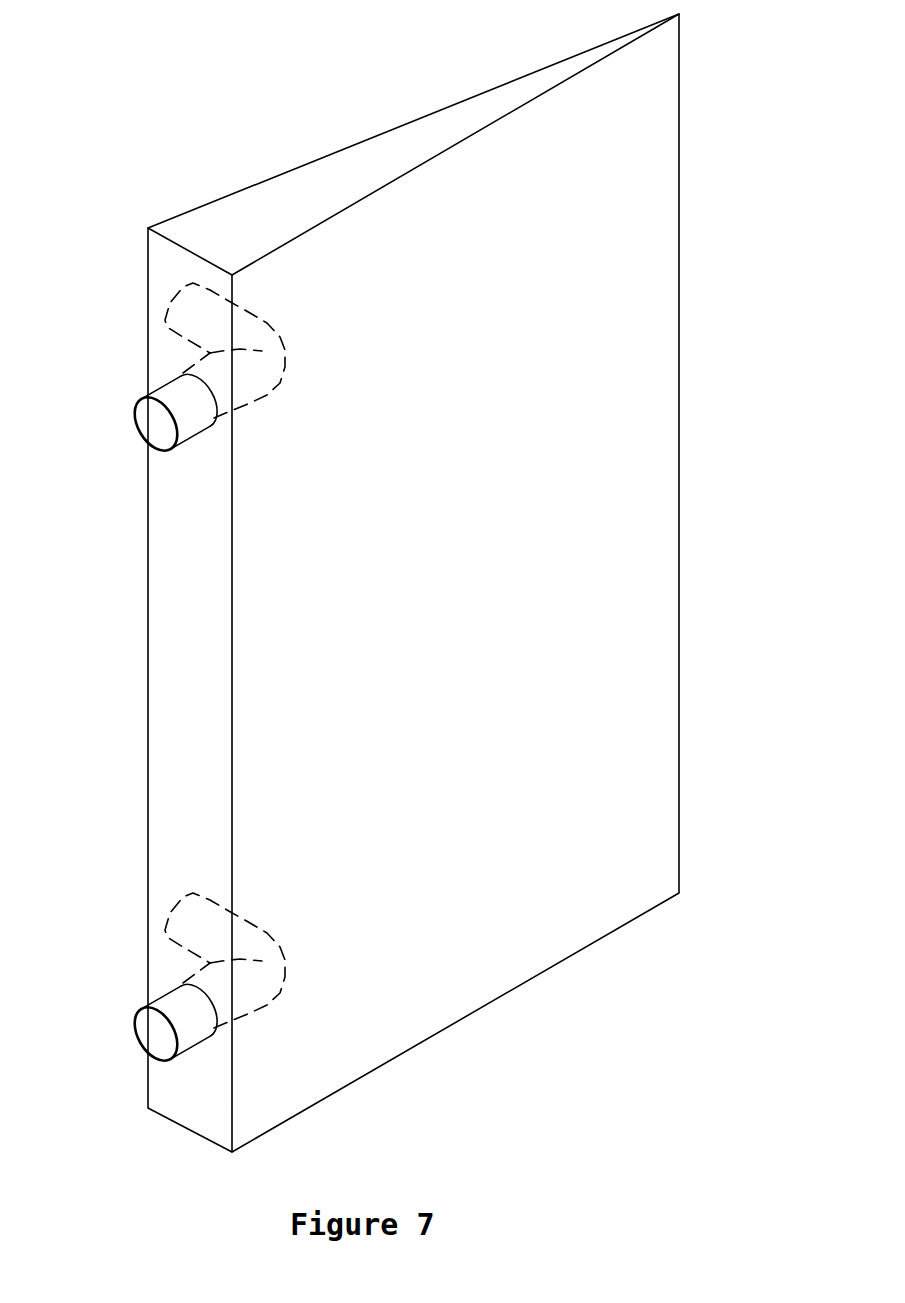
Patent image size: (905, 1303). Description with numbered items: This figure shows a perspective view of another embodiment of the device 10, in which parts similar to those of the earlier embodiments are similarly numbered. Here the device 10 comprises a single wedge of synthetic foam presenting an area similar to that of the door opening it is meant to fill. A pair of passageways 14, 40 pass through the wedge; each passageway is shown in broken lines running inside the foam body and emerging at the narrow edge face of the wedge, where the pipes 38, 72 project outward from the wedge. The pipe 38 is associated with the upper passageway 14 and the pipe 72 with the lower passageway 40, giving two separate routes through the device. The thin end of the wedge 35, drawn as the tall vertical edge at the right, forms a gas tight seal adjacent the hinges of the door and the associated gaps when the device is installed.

The device 10 is at (134, 149).
The passageway 14 is at (213, 397).
The thin end of the wedge 35 is at (681, 433).
The pipe 38 is at (157, 432).
The passageway 40 is at (202, 1022).
The pipe 72 is at (143, 1045).